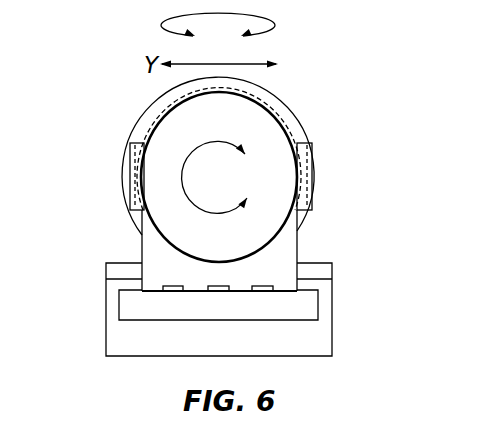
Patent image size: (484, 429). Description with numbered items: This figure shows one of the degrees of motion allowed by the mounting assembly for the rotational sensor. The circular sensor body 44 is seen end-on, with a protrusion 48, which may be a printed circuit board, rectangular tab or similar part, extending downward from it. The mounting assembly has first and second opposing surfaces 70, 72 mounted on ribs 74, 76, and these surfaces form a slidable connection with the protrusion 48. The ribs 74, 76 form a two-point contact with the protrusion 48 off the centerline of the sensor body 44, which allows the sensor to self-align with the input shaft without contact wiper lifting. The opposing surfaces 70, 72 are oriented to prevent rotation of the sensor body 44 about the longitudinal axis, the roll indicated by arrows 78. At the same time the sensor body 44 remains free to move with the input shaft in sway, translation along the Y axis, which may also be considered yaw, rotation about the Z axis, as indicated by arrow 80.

The sensor body 44 is at (234, 169).
The protrusion 48 is at (191, 217).
The first opposing surface 70 is at (172, 263).
The second opposing surface 72 is at (243, 264).
The rib 74 is at (110, 293).
The rib 76 is at (322, 283).
The arrows 78 is at (226, 177).
The arrow 80 is at (218, 32).